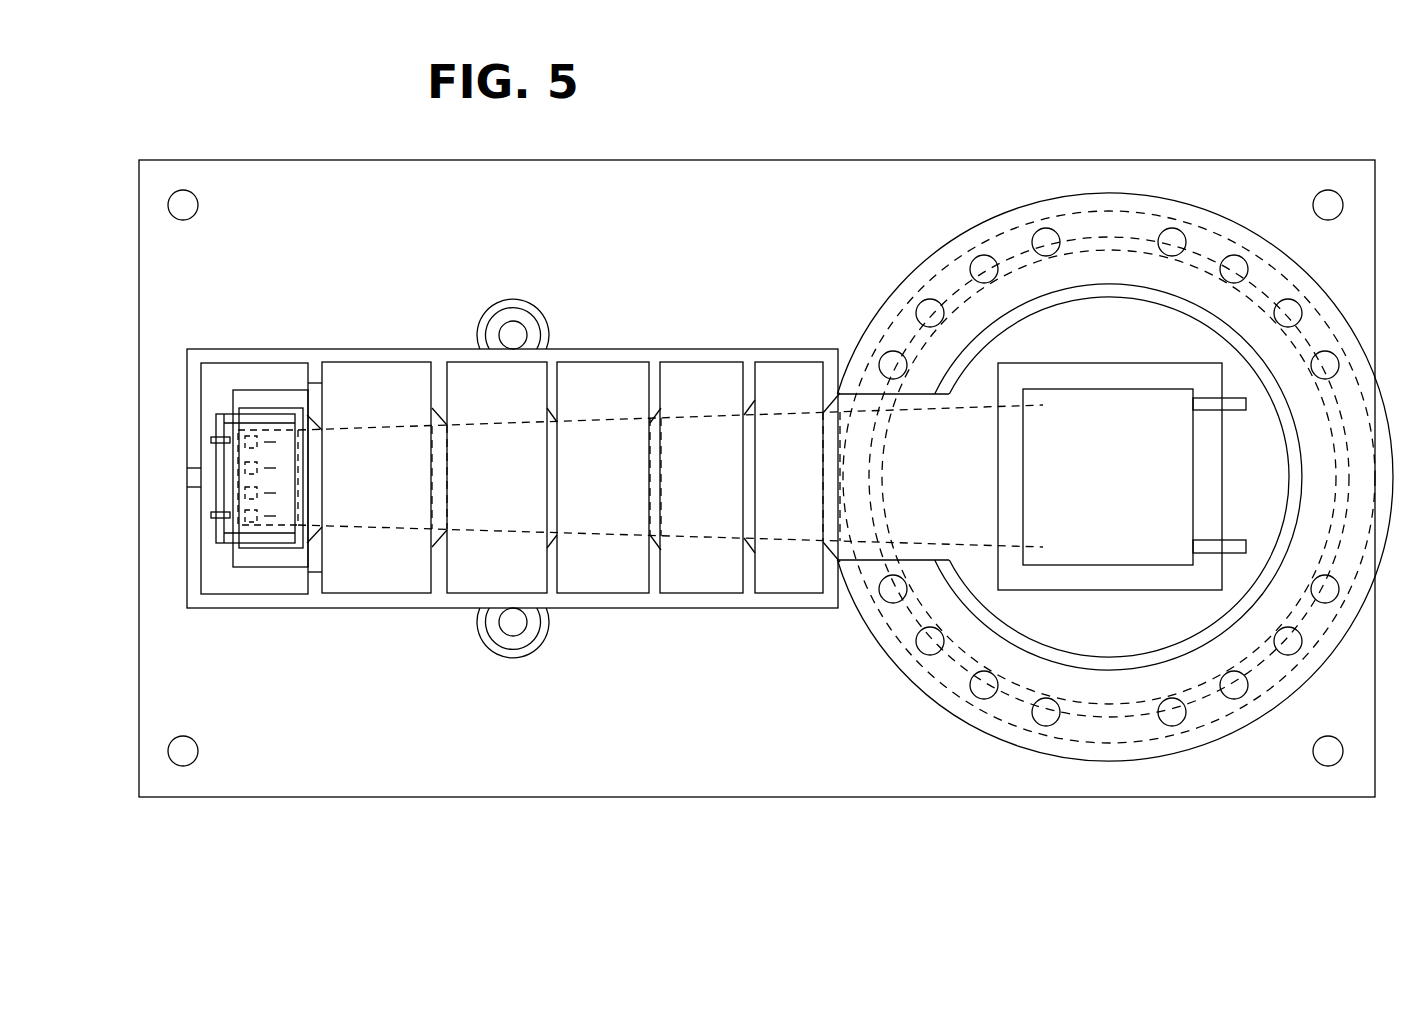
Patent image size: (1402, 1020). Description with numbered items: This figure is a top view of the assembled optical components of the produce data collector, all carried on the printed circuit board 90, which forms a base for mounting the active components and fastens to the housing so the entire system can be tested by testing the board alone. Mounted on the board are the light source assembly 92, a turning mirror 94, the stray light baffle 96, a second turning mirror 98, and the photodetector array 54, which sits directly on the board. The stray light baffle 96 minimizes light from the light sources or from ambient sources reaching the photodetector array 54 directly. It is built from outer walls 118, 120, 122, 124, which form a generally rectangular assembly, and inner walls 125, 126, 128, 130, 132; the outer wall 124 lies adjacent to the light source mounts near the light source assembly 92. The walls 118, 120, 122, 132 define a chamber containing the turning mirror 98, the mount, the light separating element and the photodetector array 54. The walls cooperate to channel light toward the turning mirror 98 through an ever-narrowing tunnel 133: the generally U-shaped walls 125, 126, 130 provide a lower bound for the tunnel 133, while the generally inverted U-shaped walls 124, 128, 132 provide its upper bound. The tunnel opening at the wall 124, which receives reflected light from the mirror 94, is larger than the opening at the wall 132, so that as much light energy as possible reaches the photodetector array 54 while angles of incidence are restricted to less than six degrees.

The photodetector array 54 is at (236, 545).
The printed circuit board 90 is at (960, 797).
The light source assembly 92 is at (1227, 737).
The turning mirror 94 is at (1108, 540).
The stray light baffle 96 is at (413, 622).
The turning mirror 98 is at (245, 452).
The outer wall 118 is at (285, 608).
The outer wall 120 is at (187, 552).
The outer wall 122 is at (252, 349).
The outer wall 124 is at (848, 605).
The inner wall 125 is at (750, 377).
The inner wall 126 is at (655, 380).
The inner wall 128 is at (552, 370).
The inner wall 130 is at (440, 372).
The inner wall 132 is at (315, 390).
The tunnel 133 is at (685, 513).